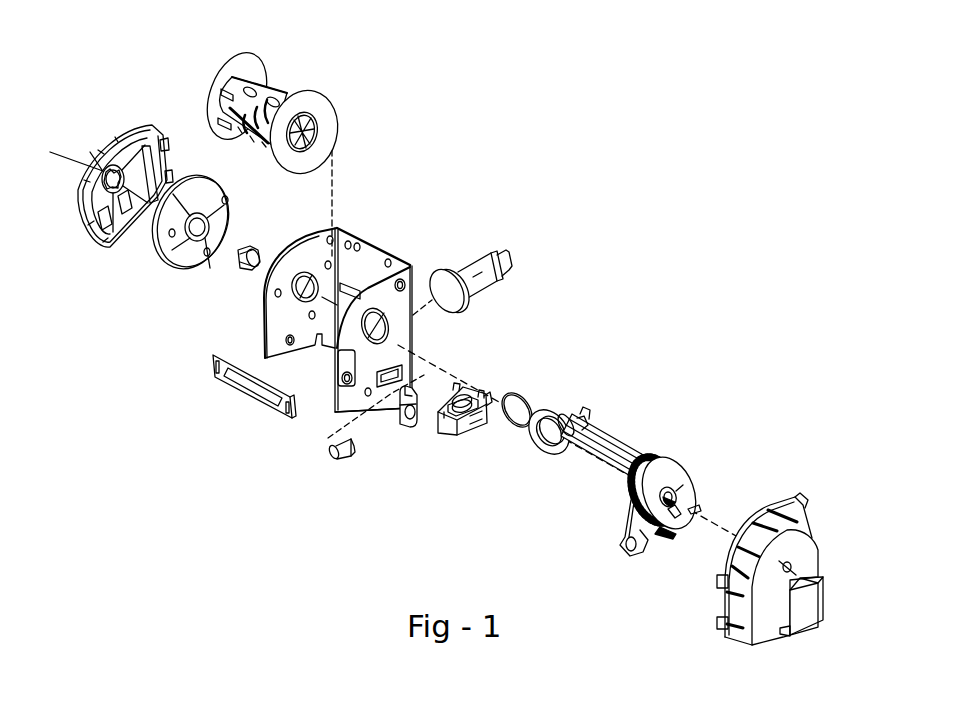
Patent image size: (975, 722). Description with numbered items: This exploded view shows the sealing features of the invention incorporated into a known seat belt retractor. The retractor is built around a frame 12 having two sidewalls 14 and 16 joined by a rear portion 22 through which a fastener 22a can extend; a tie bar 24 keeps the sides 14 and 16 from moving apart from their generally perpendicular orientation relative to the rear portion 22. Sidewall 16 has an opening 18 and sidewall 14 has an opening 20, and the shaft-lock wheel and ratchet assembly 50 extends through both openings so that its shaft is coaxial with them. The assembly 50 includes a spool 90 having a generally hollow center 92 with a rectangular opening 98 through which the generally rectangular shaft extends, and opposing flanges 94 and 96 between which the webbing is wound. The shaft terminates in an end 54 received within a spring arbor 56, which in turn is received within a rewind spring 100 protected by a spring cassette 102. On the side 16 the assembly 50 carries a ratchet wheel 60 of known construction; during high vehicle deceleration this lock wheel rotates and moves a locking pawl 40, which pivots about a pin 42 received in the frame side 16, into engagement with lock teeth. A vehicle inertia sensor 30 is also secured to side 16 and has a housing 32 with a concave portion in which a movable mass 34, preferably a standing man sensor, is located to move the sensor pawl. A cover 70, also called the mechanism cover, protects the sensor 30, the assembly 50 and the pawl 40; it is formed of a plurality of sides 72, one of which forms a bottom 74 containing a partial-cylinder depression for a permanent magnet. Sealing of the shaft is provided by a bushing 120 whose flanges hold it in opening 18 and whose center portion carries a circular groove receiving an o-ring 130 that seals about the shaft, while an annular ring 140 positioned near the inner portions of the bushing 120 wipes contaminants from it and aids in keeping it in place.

The frame 12 is at (346, 316).
The sidewall 14 is at (278, 328).
The sidewall 16 is at (343, 403).
The opening 18 is at (389, 327).
The opening 20 is at (297, 282).
The rear portion 22 is at (370, 252).
The fastener 22a is at (506, 261).
The tie bar 24 is at (280, 402).
The vehicle inertia sensor 30 is at (462, 446).
The housing 32 is at (444, 432).
The movable mass 34 is at (488, 420).
The locking pawl 40 is at (406, 426).
The pin 42 is at (335, 460).
The shaft-lock wheel and ratchet assembly 50 is at (659, 473).
The end 54 is at (580, 432).
The spring arbor 56 is at (247, 267).
The ratchet wheel 60 is at (692, 471).
The cover 70 is at (766, 584).
The side 72 is at (732, 607).
The bottom 74 is at (802, 641).
The spool 90 is at (297, 91).
The center 92 is at (273, 90).
The flange 94 is at (220, 75).
The flange 96 is at (317, 103).
The rectangular opening 98 is at (314, 124).
The rewind spring 100 is at (176, 273).
The spring cassette 102 is at (100, 232).
The bushing 120 is at (553, 411).
The o-ring 130 is at (520, 393).
The annular ring 140 is at (316, 133).